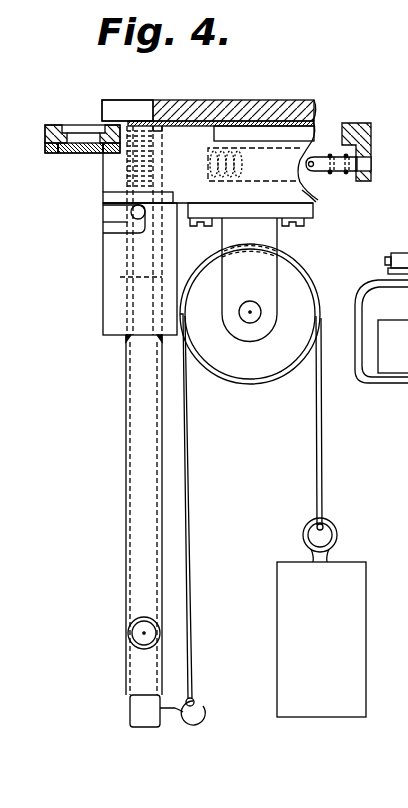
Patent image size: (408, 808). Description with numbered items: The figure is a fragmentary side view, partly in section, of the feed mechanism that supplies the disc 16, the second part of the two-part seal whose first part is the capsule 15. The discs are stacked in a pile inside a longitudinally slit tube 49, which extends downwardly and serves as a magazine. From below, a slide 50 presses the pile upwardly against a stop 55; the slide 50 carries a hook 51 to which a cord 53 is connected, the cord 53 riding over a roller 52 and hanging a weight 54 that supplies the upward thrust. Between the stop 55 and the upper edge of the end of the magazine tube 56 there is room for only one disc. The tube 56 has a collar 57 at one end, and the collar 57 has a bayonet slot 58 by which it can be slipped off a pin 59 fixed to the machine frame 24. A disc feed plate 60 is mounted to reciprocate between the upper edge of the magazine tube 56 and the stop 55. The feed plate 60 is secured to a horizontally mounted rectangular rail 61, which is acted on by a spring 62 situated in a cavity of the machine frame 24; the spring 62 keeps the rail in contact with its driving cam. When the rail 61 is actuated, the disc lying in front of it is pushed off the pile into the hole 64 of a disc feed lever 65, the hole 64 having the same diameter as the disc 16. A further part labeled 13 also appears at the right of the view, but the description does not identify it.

The frame 13 is at (375, 161).
The capsule 15 is at (406, 365).
The disc 16 is at (128, 123).
The machine frame 24 is at (310, 185).
The longitudinally slit tube 49 is at (128, 493).
The slide 50 is at (132, 708).
The hook 51 is at (209, 710).
The roller 52 is at (237, 365).
The cord 53 is at (190, 460).
The weight 54 is at (351, 603).
The stop 55 is at (133, 122).
The magazine tube 56 is at (157, 127).
The collar 57 is at (108, 295).
The bayonet slot 58 is at (110, 227).
The pin 59 is at (131, 212).
The disc feed plate 60 is at (238, 122).
The rectangular rail 61 is at (266, 130).
The spring 62 is at (328, 175).
The hole 64 is at (83, 138).
The disc feed lever 65 is at (57, 132).